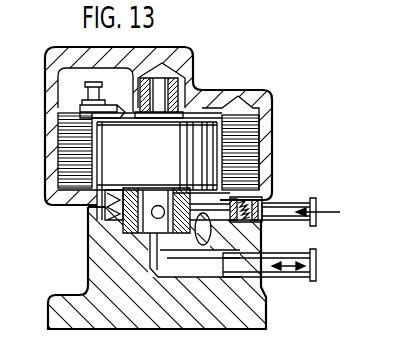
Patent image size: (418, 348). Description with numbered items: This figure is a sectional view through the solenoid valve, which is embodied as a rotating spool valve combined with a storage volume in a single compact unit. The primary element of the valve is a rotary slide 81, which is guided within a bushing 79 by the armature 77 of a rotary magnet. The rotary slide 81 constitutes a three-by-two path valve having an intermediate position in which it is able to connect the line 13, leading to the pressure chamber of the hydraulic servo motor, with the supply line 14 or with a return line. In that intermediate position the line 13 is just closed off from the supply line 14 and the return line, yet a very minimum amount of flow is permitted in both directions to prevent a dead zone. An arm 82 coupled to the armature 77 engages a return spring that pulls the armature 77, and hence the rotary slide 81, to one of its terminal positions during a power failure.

The line 13 is at (283, 273).
The supply line 14 is at (305, 202).
The armature 77 is at (206, 130).
The bushing 79 is at (118, 216).
The rotary slide 81 is at (147, 193).
The arm 82 is at (88, 110).